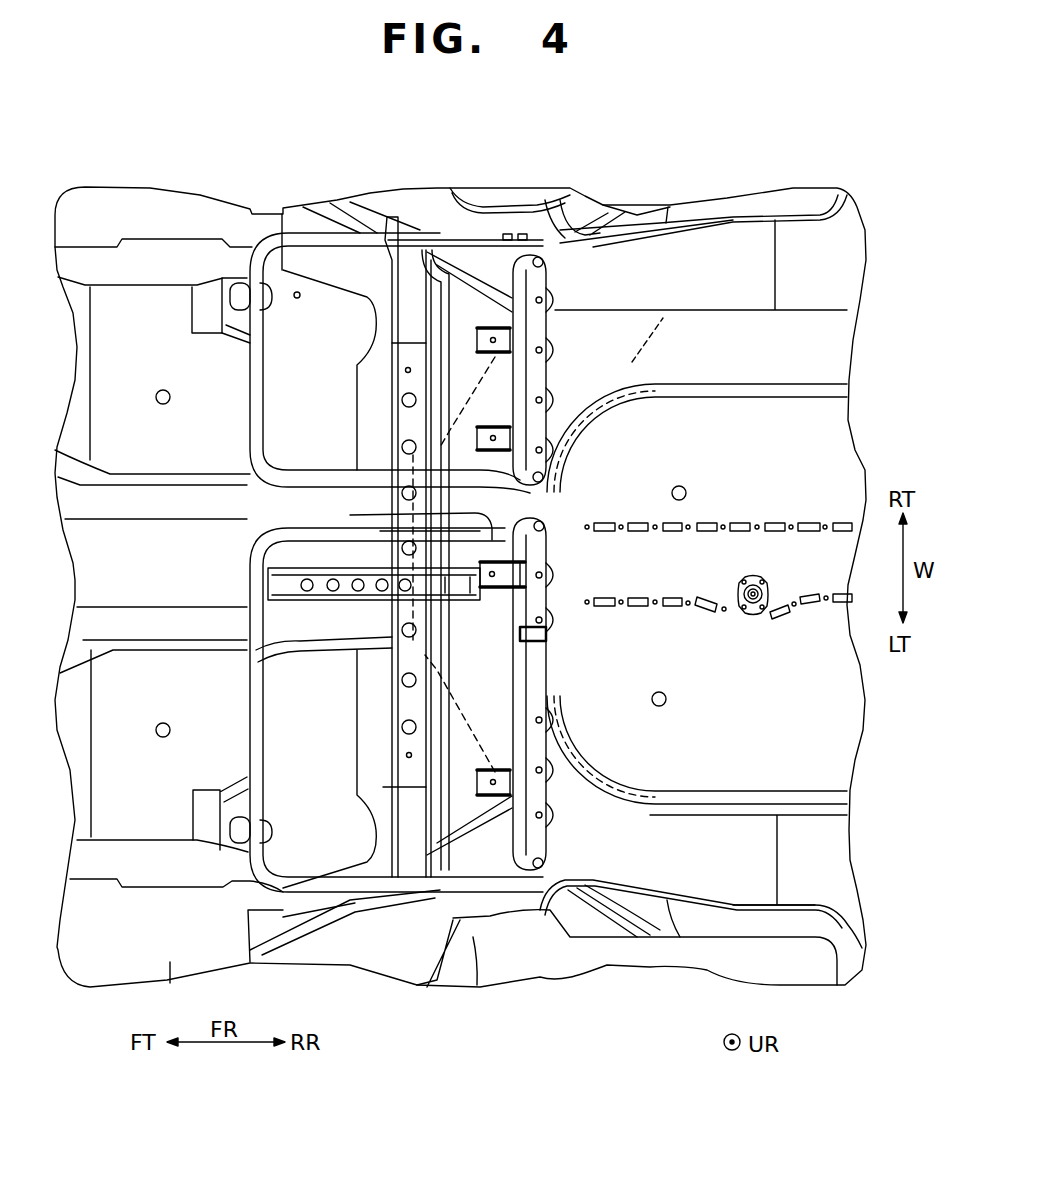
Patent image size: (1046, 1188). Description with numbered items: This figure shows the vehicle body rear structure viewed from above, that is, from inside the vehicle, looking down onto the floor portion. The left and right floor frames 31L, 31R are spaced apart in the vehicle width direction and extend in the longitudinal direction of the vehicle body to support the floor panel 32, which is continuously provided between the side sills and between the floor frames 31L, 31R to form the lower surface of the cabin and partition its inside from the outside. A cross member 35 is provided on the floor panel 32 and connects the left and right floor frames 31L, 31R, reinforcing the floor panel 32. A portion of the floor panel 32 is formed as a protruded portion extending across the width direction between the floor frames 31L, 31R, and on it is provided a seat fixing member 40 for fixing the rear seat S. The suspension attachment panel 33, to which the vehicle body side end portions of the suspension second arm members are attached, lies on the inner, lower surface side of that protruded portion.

The right floor frame 31R is at (755, 263).
The left floor frame 31L is at (755, 863).
The floor panel 32 is at (303, 425).
The suspension attachment panel 33 is at (650, 358).
The cross member 35 is at (403, 703).
The seat fixing member 40 is at (493, 587).
The seat S is at (250, 562).